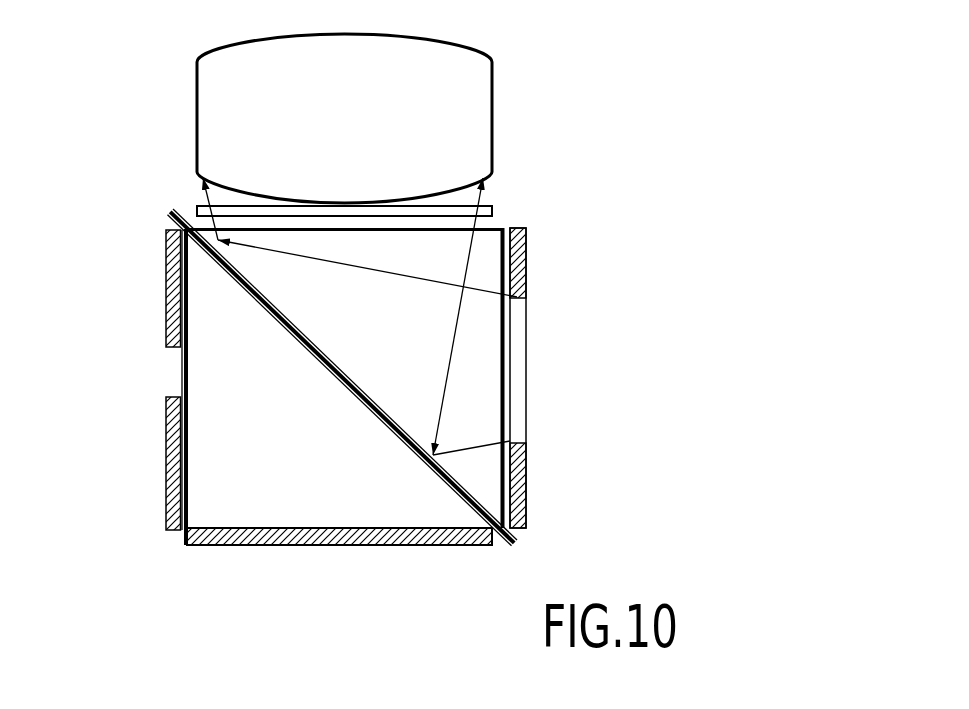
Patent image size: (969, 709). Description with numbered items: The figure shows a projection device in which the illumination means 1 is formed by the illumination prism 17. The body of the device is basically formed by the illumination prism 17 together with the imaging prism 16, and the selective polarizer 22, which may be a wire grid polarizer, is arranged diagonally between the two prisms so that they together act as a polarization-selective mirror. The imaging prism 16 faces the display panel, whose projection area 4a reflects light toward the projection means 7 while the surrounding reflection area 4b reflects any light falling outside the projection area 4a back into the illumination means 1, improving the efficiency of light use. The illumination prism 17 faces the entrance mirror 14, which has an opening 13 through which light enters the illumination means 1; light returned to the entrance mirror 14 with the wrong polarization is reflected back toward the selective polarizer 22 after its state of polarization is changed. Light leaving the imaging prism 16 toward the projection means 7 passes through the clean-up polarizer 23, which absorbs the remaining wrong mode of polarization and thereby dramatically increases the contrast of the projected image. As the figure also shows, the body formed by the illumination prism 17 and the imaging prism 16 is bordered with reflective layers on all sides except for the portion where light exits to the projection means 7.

The projection means 7 is at (197, 132).
The clean-up polarizer 23 is at (512, 209).
The illumination means 1 is at (345, 428).
The illumination prism 17 is at (338, 477).
The entrance mirror 14 is at (165, 263).
The opening 13 is at (175, 363).
The projection area 4a is at (518, 385).
The imaging prism 16 is at (483, 268).
The reflection area 4b is at (520, 485).
The selective polarizer 22 is at (518, 540).